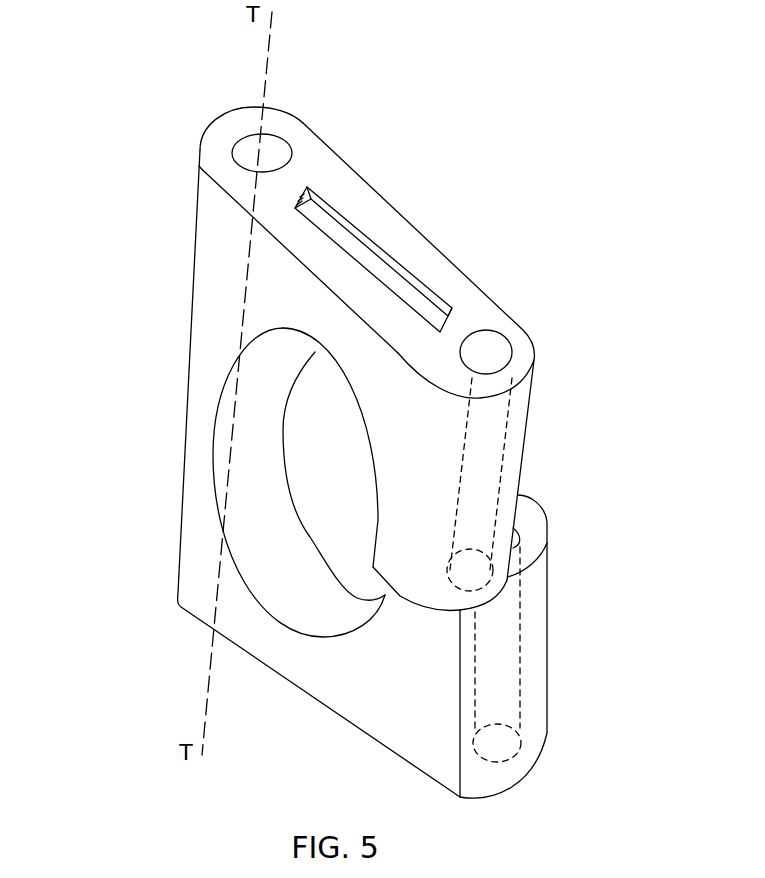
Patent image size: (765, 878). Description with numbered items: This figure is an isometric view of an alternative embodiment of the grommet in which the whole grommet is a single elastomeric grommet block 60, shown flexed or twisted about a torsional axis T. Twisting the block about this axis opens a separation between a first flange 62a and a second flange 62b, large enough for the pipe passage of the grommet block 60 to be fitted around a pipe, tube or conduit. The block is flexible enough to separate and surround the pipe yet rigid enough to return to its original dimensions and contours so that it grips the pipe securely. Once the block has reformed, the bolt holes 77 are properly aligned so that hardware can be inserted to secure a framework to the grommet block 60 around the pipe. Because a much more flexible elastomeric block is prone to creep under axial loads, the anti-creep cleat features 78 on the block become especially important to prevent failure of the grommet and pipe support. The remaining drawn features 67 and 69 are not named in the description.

The elastomeric grommet block 60 is at (130, 390).
The first flange 62a is at (523, 462).
The second flange 62b is at (547, 617).
The top mounting hole 67 is at (418, 250).
The through opening 69 is at (310, 583).
The bolt holes 77 is at (495, 358).
The anti-creep cleat features 78 is at (340, 222).